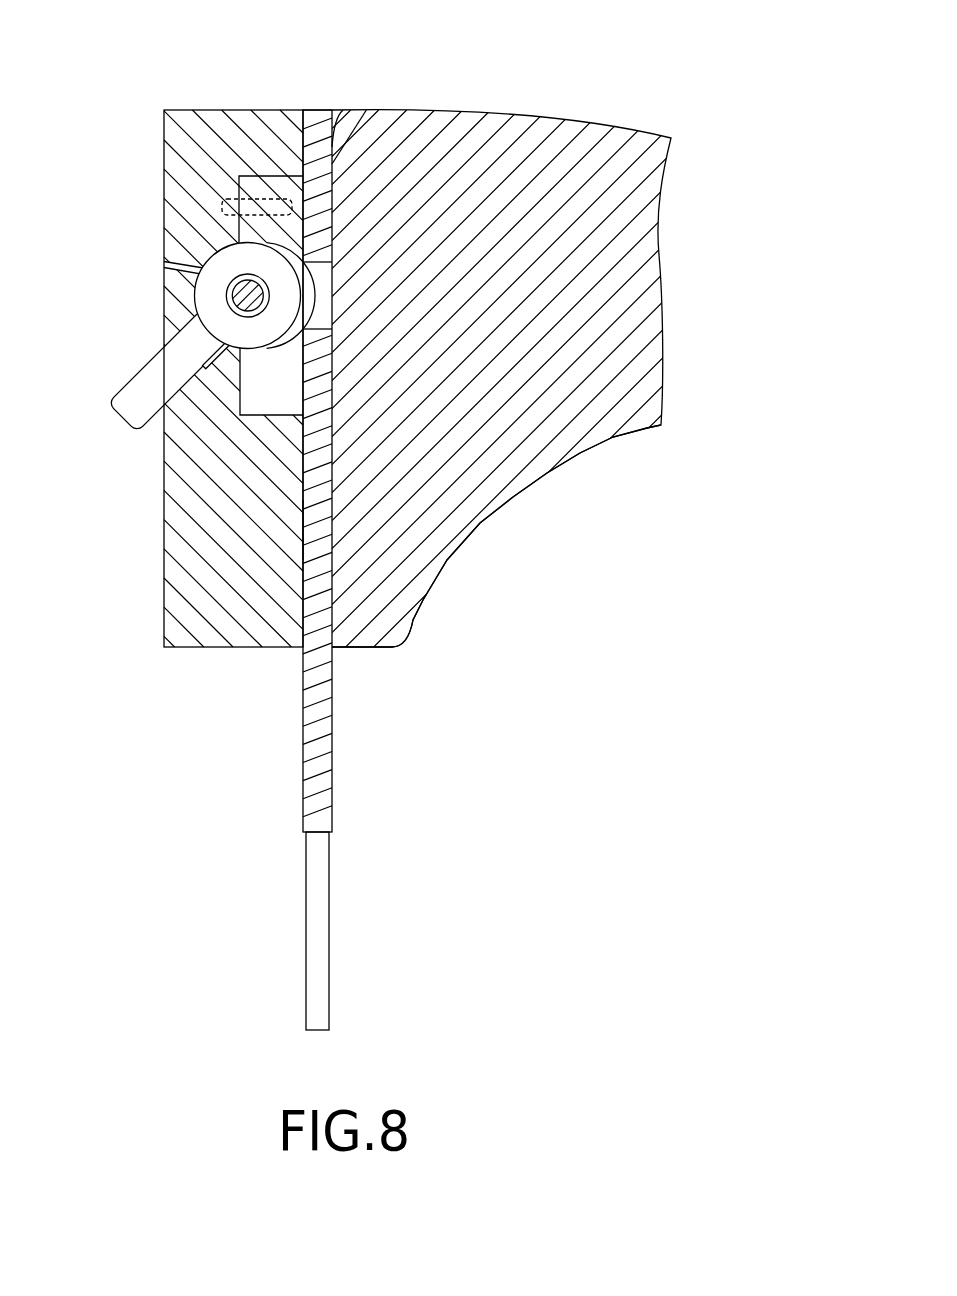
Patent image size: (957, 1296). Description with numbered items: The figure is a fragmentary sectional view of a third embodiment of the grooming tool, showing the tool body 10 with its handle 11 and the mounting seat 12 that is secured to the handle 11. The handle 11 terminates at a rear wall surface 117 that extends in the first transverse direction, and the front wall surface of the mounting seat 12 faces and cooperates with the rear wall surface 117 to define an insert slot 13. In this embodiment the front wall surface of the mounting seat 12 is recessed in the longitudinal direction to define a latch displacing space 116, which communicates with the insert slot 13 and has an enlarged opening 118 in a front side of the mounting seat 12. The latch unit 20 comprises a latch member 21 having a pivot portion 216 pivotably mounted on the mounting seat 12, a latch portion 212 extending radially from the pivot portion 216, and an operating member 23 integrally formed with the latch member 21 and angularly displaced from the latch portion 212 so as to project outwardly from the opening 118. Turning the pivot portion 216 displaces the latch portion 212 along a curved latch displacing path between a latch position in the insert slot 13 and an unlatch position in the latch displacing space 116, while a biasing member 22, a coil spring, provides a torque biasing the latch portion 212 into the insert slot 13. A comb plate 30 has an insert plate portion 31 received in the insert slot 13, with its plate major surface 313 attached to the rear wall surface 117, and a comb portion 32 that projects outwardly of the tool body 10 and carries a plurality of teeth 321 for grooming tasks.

The tool body 10 is at (502, 325).
The handle 11 is at (522, 106).
The mounting seat 12 is at (176, 355).
The insert slot 13 is at (367, 109).
The latch displacing space 116 is at (275, 370).
The rear wall surface 117 is at (496, 536).
The enlarged opening 118 is at (175, 284).
The latch unit 20 is at (212, 255).
The latch member 21 is at (256, 196).
The latch portion 212 is at (332, 245).
The pivot portion 216 is at (257, 263).
The biasing member 22 is at (230, 297).
The operating member 23 is at (131, 412).
The comb plate 30 is at (314, 432).
The insert plate portion 31 is at (343, 109).
The plate major surface 313 is at (332, 533).
The comb portion 32 is at (415, 931).
The teeth 321 is at (330, 930).